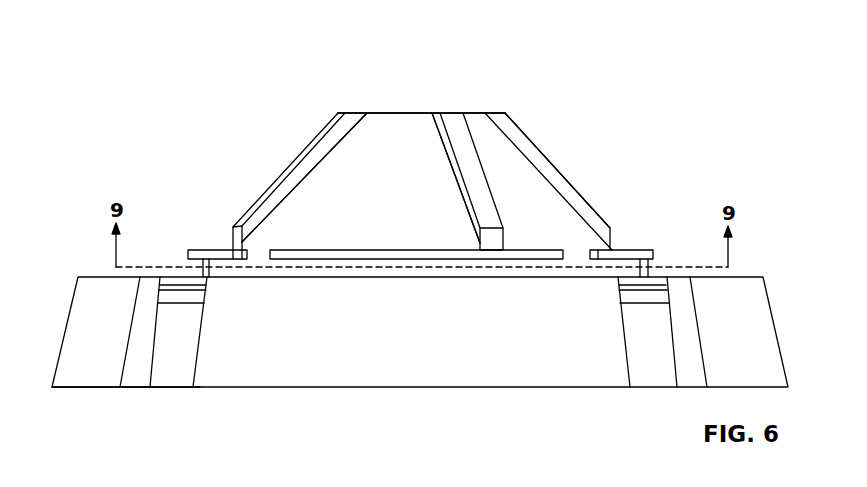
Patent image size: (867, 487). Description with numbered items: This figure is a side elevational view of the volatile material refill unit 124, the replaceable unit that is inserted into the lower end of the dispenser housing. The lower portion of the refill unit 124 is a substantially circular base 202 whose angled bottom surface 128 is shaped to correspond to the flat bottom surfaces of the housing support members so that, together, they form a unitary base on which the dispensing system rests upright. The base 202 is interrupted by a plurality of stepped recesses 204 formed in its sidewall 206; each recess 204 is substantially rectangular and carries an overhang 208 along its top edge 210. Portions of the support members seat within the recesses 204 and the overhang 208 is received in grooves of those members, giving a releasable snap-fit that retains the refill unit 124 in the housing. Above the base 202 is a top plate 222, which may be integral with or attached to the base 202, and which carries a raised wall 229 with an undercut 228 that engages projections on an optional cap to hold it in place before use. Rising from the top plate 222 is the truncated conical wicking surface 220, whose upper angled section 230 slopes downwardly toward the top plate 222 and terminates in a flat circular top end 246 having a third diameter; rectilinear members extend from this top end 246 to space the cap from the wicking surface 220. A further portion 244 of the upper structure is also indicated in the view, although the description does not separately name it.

The volatile material refill unit 124 is at (218, 64).
The bottom surface 128 is at (84, 387).
The base 202 is at (445, 372).
The stepped recesses 204 is at (182, 318).
The sidewall 206 is at (760, 327).
The overhang 208 is at (207, 288).
The top edge 210 is at (170, 276).
The truncated conical wicking surface 220 is at (540, 195).
The top plate 222 is at (98, 276).
The undercut 228 is at (205, 262).
The raised wall 229 is at (632, 250).
The upper angled section 230 is at (392, 125).
The top plate 244 is at (430, 112).
The flat circular top end 246 is at (453, 120).